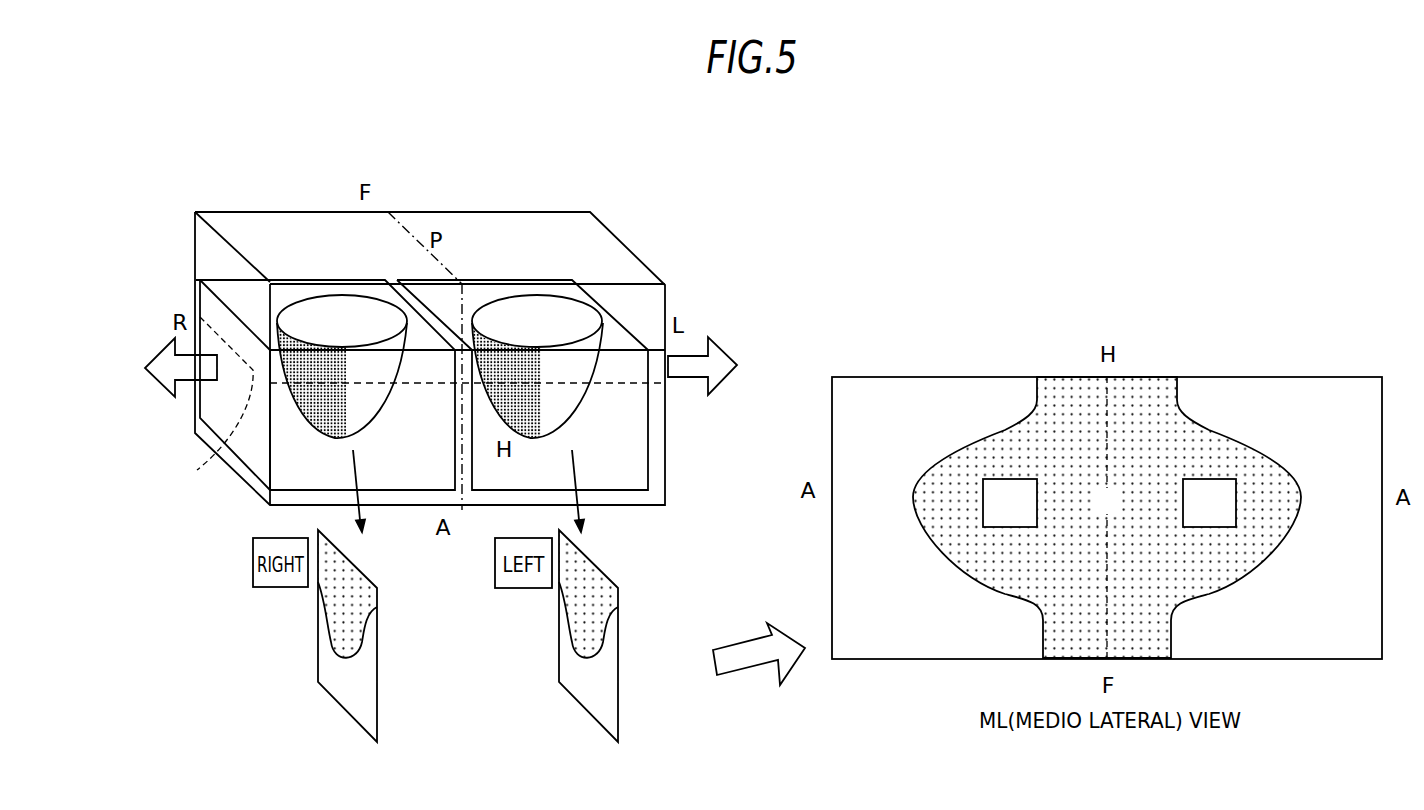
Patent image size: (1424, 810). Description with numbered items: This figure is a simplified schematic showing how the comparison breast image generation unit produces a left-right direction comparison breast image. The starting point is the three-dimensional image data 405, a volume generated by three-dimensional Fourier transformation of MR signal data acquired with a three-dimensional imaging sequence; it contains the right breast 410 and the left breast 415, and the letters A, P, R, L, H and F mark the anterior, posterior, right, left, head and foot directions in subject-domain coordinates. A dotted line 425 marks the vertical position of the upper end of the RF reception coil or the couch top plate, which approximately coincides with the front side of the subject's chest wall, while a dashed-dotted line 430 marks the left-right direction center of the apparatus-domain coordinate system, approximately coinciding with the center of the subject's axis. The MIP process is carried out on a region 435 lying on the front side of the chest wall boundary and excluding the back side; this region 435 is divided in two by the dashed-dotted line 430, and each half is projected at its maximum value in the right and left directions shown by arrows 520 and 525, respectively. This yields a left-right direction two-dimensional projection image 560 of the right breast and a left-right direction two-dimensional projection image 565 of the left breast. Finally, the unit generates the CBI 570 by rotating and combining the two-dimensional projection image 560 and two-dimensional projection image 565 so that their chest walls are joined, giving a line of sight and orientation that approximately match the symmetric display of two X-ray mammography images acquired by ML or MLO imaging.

The three-dimensional image data 405 is at (195, 234).
The right breast 410 is at (330, 438).
The left breast 415 is at (562, 407).
The dotted line 425 is at (216, 407).
The dashed-dotted line 430 is at (412, 245).
The region 435 is at (200, 297).
The arrow 520 is at (175, 396).
The arrow 525 is at (722, 348).
The two-dimensional projection image of the right breast 560 is at (350, 716).
The two-dimensional projection image of the left breast 565 is at (589, 716).
The CBI 570 is at (883, 377).